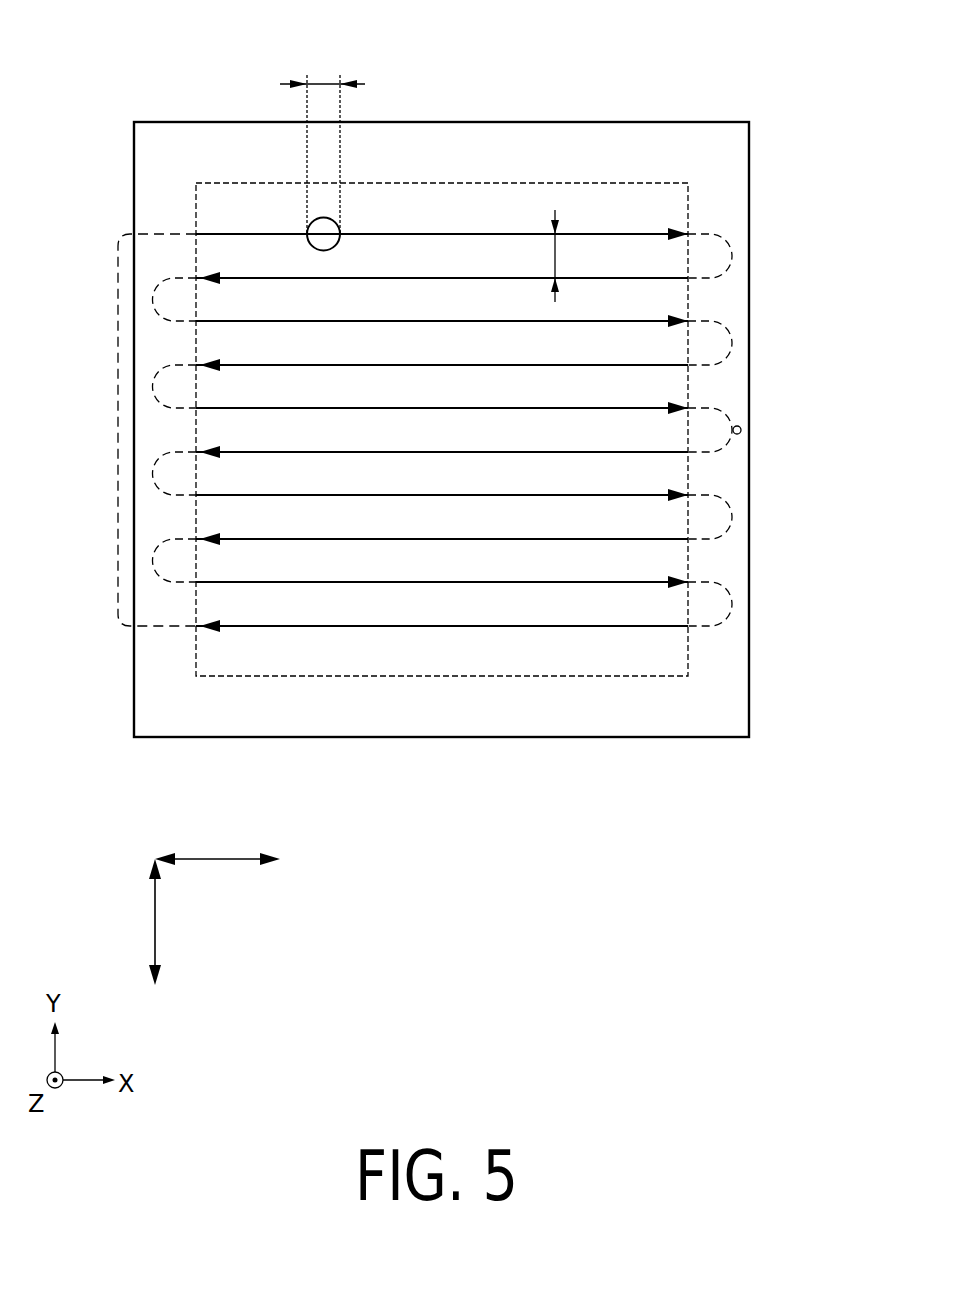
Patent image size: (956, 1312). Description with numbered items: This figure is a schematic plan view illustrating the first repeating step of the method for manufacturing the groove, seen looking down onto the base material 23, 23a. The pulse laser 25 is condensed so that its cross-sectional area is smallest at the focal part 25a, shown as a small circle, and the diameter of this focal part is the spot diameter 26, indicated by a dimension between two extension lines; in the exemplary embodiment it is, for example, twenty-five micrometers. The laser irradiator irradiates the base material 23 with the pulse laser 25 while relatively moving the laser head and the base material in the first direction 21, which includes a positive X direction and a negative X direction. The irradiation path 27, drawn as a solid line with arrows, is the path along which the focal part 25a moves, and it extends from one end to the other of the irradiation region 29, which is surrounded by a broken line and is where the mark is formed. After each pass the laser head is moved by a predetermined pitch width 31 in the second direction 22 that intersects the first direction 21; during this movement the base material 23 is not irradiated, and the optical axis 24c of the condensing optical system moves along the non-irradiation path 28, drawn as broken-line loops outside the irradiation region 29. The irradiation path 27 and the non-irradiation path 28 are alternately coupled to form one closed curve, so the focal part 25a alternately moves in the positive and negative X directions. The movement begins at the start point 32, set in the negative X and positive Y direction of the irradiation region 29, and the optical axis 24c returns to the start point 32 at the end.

The first direction 21 is at (219, 857).
The second direction 22 is at (153, 925).
The base material 23 is at (453, 396).
The substrate surface 23a is at (706, 140).
The optical axis 24c is at (741, 430).
The pulse laser 25 is at (385, 153).
The focal part 25a is at (340, 233).
The spot diameter 26 is at (325, 82).
The irradiation path 27 is at (512, 232).
The non-irradiation path 28 is at (732, 256).
The irradiation region 29 is at (608, 182).
The pitch width 31 is at (557, 255).
The start point 32 is at (196, 234).